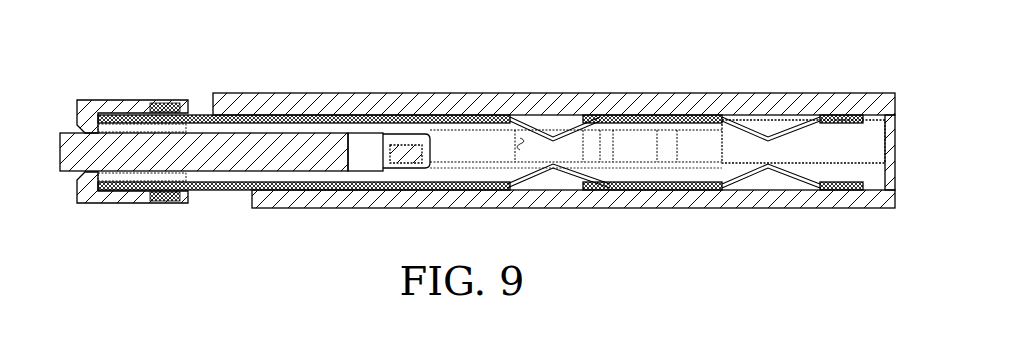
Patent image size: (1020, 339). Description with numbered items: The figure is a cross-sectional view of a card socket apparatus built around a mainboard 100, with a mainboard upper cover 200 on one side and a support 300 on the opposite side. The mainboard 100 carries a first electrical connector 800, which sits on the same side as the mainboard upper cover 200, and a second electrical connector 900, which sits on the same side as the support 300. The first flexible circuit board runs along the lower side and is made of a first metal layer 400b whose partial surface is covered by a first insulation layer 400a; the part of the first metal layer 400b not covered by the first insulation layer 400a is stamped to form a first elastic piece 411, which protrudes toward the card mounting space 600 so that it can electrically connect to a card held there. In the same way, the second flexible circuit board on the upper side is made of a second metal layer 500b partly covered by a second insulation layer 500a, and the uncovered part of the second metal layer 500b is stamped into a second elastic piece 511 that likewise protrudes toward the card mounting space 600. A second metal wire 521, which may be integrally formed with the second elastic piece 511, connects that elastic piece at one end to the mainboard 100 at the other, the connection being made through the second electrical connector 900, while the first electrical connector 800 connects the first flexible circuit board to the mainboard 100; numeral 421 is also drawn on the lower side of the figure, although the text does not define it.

The mainboard 100 is at (62, 131).
The mainboard upper cover 200 is at (683, 208).
The support 300 is at (640, 93).
The first insulation layer 400a is at (203, 191).
The first metal layer 400b is at (512, 228).
The first elastic piece 411 is at (568, 178).
The lower connecting portion 421 is at (313, 191).
The second insulation layer 500a is at (200, 114).
The second metal layer 500b is at (490, 43).
The second elastic piece 511 is at (560, 135).
The second metal wire 521 is at (400, 135).
The card mounting space 600 is at (797, 140).
The first electrical connector 800 is at (128, 200).
The second electrical connector 900 is at (100, 98).